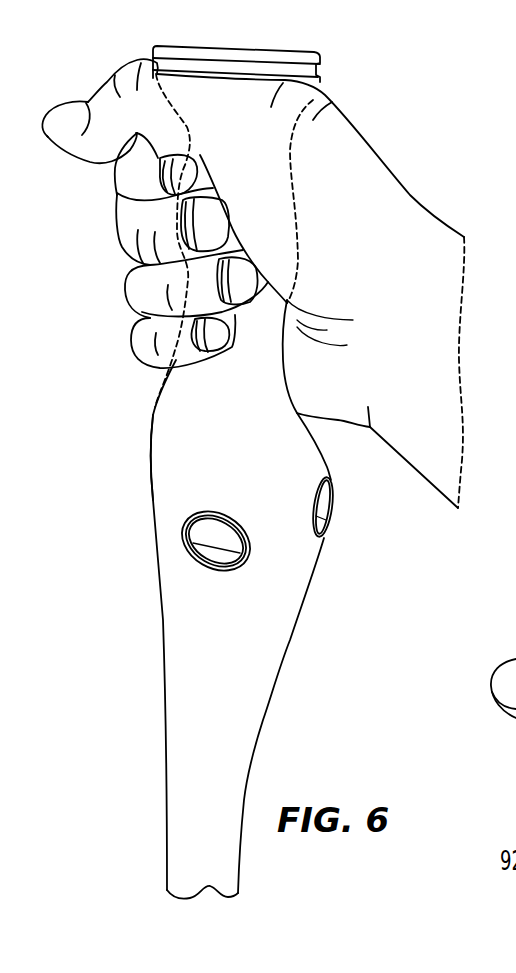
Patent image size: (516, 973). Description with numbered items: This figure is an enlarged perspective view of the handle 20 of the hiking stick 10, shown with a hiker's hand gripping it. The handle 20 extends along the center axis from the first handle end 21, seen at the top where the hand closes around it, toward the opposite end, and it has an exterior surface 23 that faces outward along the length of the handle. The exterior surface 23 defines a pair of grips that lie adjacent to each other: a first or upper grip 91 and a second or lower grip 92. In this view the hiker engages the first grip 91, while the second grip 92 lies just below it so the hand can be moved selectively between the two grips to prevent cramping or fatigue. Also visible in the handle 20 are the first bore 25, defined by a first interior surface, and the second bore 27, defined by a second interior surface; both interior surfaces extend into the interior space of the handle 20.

The hiking stick 10 is at (101, 571).
The handle 20 is at (182, 720).
The first handle end 21 is at (348, 76).
The exterior surface 23 is at (263, 640).
The first bore 25 is at (333, 507).
The second bore 27 is at (209, 533).
The first or upper grip 91 is at (267, 164).
The second or lower grip 92 is at (226, 443).